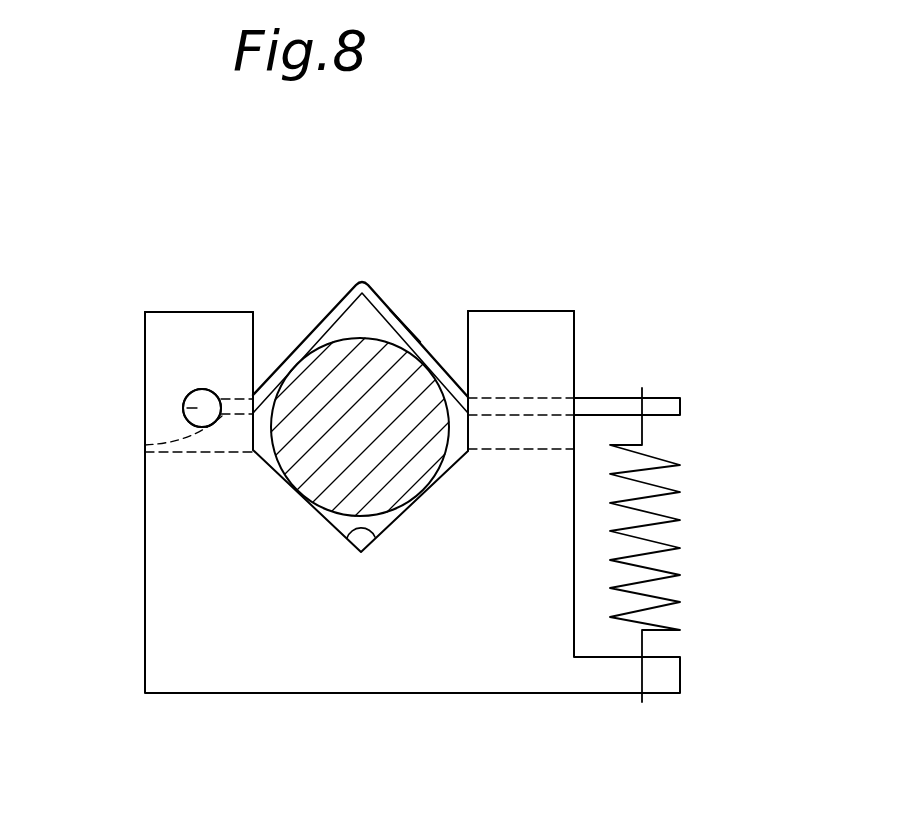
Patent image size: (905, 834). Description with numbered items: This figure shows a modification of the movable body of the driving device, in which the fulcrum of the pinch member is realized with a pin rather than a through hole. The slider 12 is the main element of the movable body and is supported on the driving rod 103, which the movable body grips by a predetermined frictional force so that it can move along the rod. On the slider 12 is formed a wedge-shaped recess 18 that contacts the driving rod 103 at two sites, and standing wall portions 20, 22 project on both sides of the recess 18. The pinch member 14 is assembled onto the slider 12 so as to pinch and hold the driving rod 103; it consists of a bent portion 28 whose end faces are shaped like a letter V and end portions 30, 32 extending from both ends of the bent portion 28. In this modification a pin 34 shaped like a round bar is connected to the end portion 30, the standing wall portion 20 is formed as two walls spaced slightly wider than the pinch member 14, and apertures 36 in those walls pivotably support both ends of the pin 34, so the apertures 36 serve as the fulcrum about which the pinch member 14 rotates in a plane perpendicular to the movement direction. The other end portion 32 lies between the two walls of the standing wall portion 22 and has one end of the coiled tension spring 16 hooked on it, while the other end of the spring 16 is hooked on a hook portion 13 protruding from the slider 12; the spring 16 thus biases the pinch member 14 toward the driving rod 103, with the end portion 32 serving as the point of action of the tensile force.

The slider 12 is at (140, 612).
The hook portion 13 is at (667, 693).
The pinch member 14 is at (387, 277).
The coiled tension spring 16 is at (673, 517).
The wedge-shaped recess 18 is at (375, 537).
The standing wall portion 20 is at (146, 332).
The standing wall portion 22 is at (574, 330).
The bent portion 28 is at (405, 315).
The end portion 30 is at (145, 445).
The end portion 32 is at (670, 415).
The pin 34 is at (187, 408).
The apertures 36 is at (192, 392).
The driving rod 103 is at (350, 338).